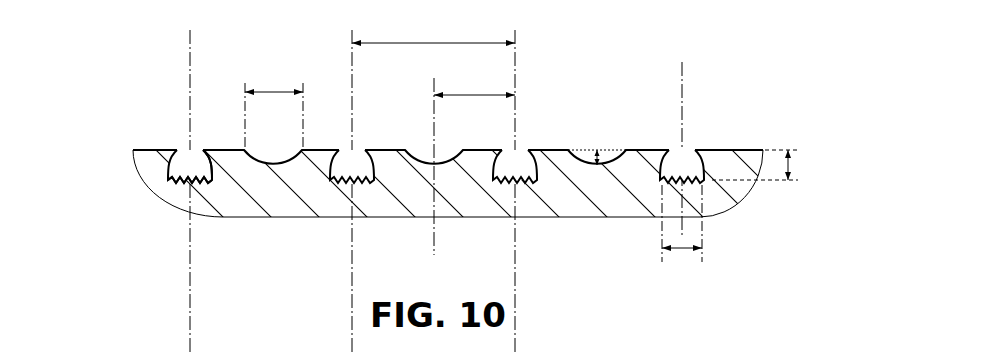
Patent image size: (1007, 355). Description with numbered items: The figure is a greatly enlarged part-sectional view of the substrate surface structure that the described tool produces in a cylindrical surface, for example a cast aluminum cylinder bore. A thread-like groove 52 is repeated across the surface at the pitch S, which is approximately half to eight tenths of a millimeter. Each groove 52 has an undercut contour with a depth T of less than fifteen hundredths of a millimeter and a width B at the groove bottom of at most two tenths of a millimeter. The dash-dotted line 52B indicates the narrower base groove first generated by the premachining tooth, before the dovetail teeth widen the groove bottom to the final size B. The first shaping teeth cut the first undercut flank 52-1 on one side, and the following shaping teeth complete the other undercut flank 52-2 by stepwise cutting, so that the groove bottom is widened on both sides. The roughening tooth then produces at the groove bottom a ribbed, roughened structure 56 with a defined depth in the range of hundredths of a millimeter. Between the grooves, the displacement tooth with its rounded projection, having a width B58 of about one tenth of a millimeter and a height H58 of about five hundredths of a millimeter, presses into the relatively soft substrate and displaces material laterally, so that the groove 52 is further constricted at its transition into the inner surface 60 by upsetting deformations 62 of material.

The first undercut flank 52-1 is at (201, 150).
The other undercut flank 52-2 is at (177, 151).
The roughened structure 56 is at (182, 185).
The base groove 52B is at (347, 148).
The groove 52 is at (528, 150).
The upsetting deformations 62 is at (669, 150).
The inner surface 60 is at (734, 150).
The width of the rounded projection B58 is at (273, 91).
The pitch S is at (436, 43).
The height of the rounded projection H58 is at (597, 150).
The depth T is at (790, 165).
The width B is at (681, 250).